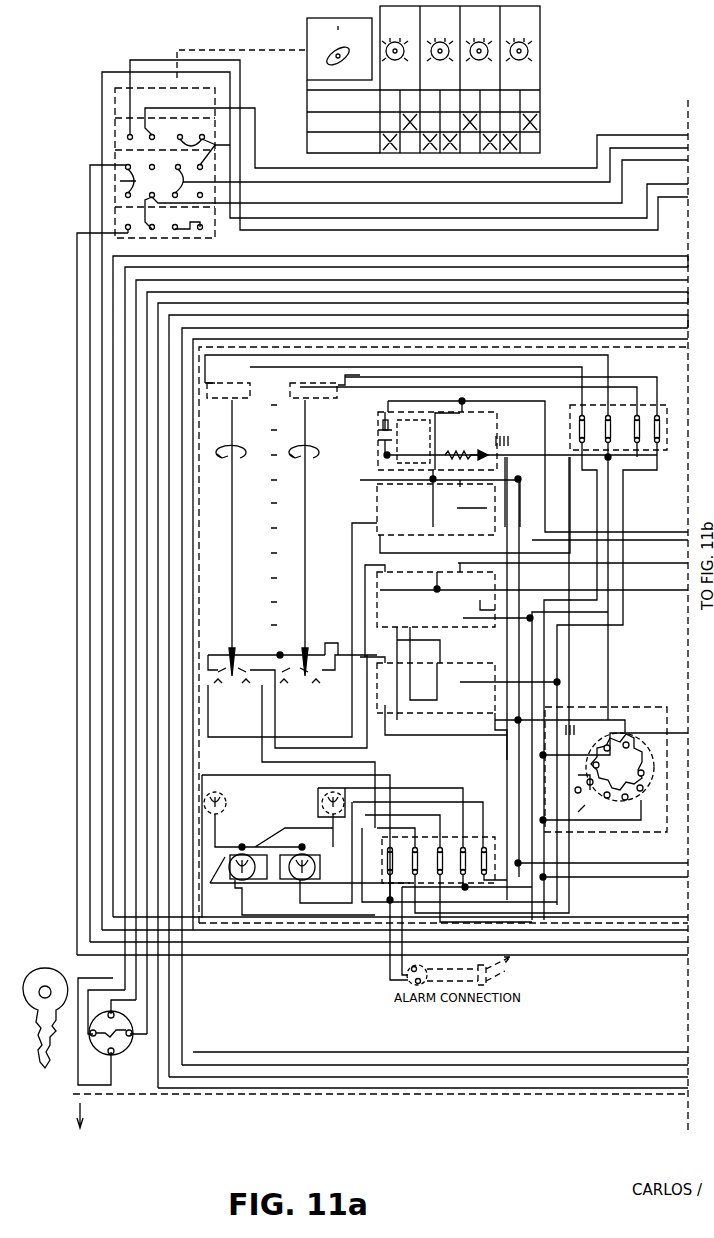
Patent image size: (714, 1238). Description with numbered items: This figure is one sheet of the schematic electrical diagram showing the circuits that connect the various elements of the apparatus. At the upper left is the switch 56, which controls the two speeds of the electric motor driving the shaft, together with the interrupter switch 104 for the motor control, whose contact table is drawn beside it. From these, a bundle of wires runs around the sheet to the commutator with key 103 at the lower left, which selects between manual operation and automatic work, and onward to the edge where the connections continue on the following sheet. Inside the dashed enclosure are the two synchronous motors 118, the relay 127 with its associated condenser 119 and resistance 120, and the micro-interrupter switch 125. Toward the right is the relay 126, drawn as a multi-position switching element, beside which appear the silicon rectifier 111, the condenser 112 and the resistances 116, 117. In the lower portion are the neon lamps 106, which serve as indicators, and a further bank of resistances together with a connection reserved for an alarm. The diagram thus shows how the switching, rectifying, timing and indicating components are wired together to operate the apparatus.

The switch 56 is at (375, 144).
The commutator with key 103 is at (115, 1041).
The interrupter switch for the motor control 104 is at (394, 79).
The neon lamp 106 is at (379, 846).
The synchronous motor 118 is at (236, 385).
The condenser 119 is at (382, 438).
The resistance 120 is at (435, 438).
The micro-interrupter switch 125 is at (233, 685).
The relay 126 is at (636, 743).
The relay 127 is at (384, 418).
The silicon rectifier 111 is at (573, 729).
The condenser 112 is at (571, 756).
The resistance 116 is at (579, 810).
The resistance 117 is at (601, 814).